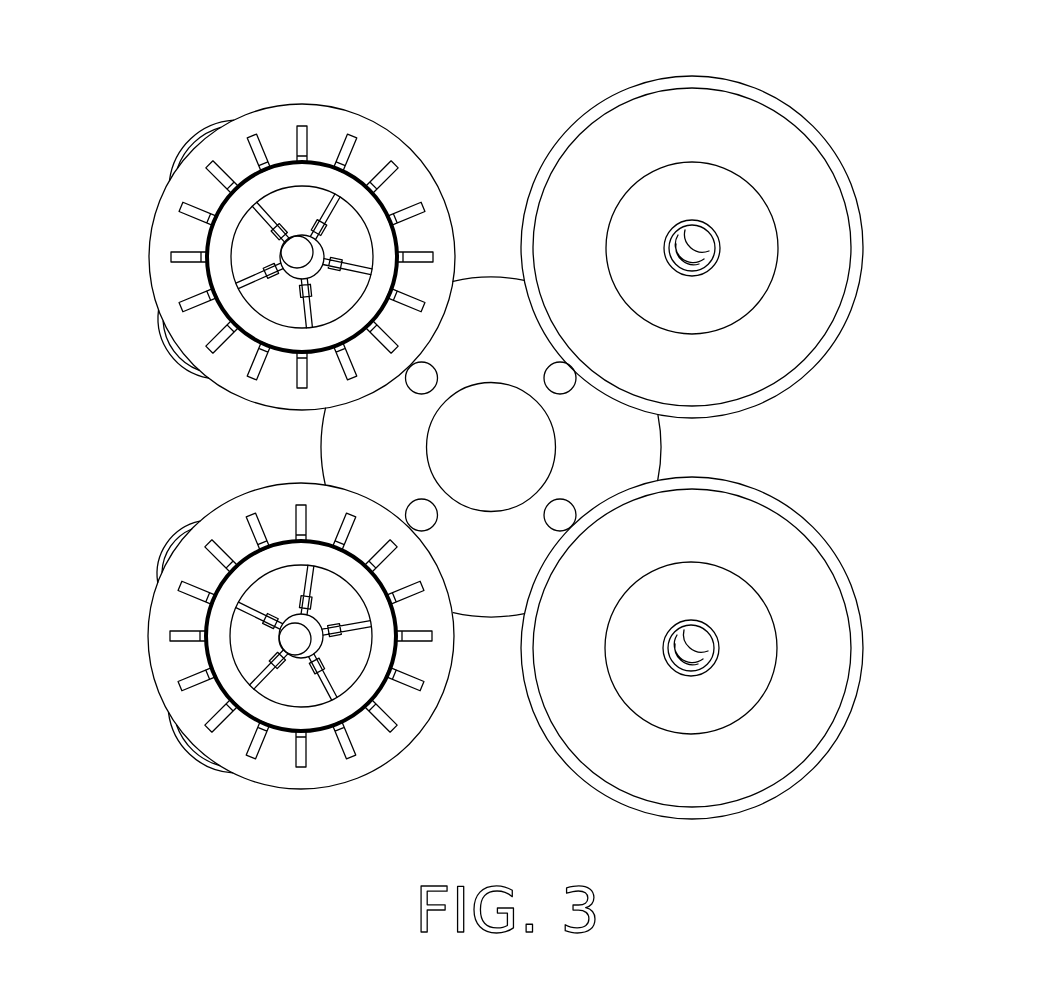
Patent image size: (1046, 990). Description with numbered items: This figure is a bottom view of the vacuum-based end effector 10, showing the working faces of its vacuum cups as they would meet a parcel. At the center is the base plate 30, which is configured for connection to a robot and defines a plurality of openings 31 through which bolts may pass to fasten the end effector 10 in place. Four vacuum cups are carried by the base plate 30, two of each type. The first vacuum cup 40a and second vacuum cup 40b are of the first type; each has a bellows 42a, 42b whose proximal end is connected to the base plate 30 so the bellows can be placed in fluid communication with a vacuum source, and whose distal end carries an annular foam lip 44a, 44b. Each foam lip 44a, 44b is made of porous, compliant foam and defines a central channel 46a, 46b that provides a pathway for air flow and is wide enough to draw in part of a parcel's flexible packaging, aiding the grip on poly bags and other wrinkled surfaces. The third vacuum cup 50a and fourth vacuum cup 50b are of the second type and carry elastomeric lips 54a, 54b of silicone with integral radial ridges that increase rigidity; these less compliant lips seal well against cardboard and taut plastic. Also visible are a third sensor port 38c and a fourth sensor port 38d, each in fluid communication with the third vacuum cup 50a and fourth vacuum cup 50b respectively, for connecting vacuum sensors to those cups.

The end effector 10 is at (499, 434).
The base plate 30 is at (322, 446).
The openings 31 is at (560, 373).
The third sensor port 38c is at (184, 528).
The fourth sensor port 38d is at (170, 347).
The first vacuum cup 40a is at (682, 76).
The second vacuum cup 40b is at (820, 537).
The bellows 42a is at (747, 292).
The bellows 42b is at (743, 628).
The foam lip 44a is at (820, 206).
The foam lip 44b is at (803, 744).
The central channel 46a is at (745, 318).
The central channel 46b is at (730, 727).
The third vacuum cup 50a is at (288, 790).
The fourth vacuum cup 50b is at (240, 113).
The elastomeric lip 54a is at (228, 749).
The elastomeric lip 54b is at (327, 122).